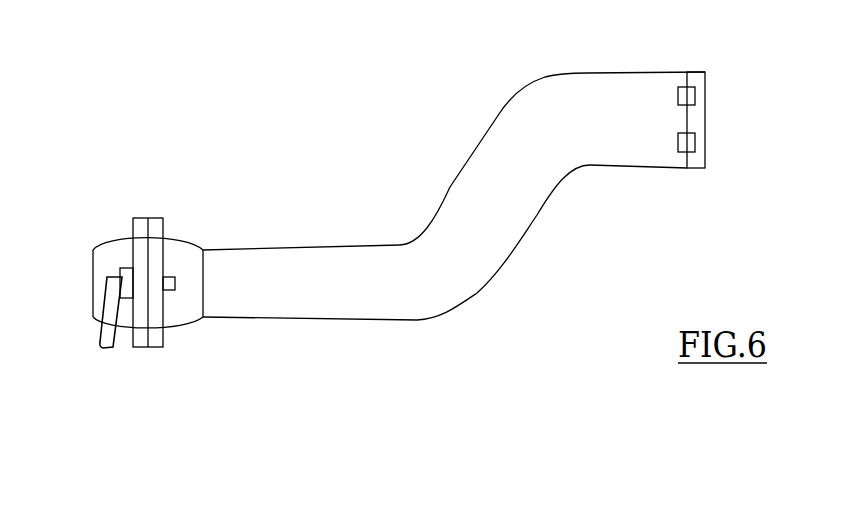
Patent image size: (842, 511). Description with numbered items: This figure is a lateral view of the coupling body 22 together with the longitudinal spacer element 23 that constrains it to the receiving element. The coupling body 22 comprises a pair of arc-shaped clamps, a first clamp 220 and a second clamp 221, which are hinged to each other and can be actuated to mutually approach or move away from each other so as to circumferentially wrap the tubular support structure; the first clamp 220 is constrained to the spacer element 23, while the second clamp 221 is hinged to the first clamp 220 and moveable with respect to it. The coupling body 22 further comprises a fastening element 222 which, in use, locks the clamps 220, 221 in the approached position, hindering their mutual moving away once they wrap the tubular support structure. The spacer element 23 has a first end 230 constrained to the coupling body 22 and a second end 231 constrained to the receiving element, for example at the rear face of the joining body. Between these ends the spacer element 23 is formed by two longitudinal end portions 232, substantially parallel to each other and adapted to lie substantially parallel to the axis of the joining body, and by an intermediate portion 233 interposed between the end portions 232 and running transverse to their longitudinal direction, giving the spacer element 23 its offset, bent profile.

The coupling body 22 is at (117, 197).
The first clamp 220 is at (185, 325).
The second clamp 221 is at (93, 317).
The fastening element 222 is at (112, 343).
The longitudinal spacer element 23 is at (390, 125).
The first end 230 is at (222, 288).
The second end 231 is at (678, 160).
The longitudinal end portions 232 is at (307, 295).
The intermediate portion 233 is at (502, 188).